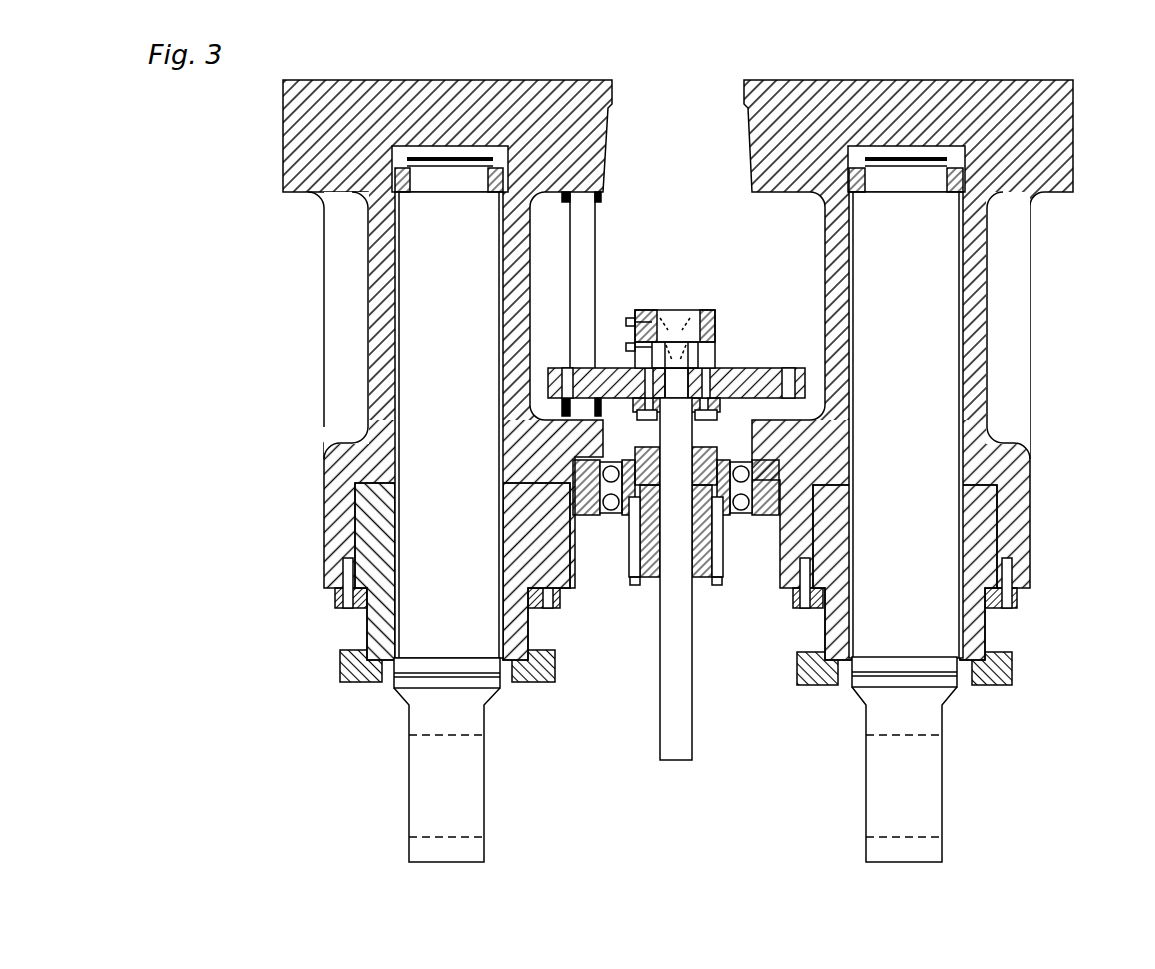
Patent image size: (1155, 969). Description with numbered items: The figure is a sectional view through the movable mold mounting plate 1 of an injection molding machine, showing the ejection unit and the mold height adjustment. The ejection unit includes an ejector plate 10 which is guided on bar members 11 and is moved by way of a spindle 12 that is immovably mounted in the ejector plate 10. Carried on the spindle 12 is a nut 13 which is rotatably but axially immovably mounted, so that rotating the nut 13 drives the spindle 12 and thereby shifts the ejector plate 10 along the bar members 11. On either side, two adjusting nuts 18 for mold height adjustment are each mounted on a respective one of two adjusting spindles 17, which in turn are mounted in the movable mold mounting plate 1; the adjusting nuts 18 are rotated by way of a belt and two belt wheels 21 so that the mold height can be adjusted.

The movable mold mounting plate 1 is at (1022, 155).
The ejector plate 10 is at (732, 370).
The bar members 11 is at (582, 208).
The spindle 12 is at (677, 698).
The nut 13 is at (703, 578).
The adjusting spindles 17 is at (432, 349).
The adjusting nuts 18 is at (980, 528).
The belt wheels 21 is at (352, 670).